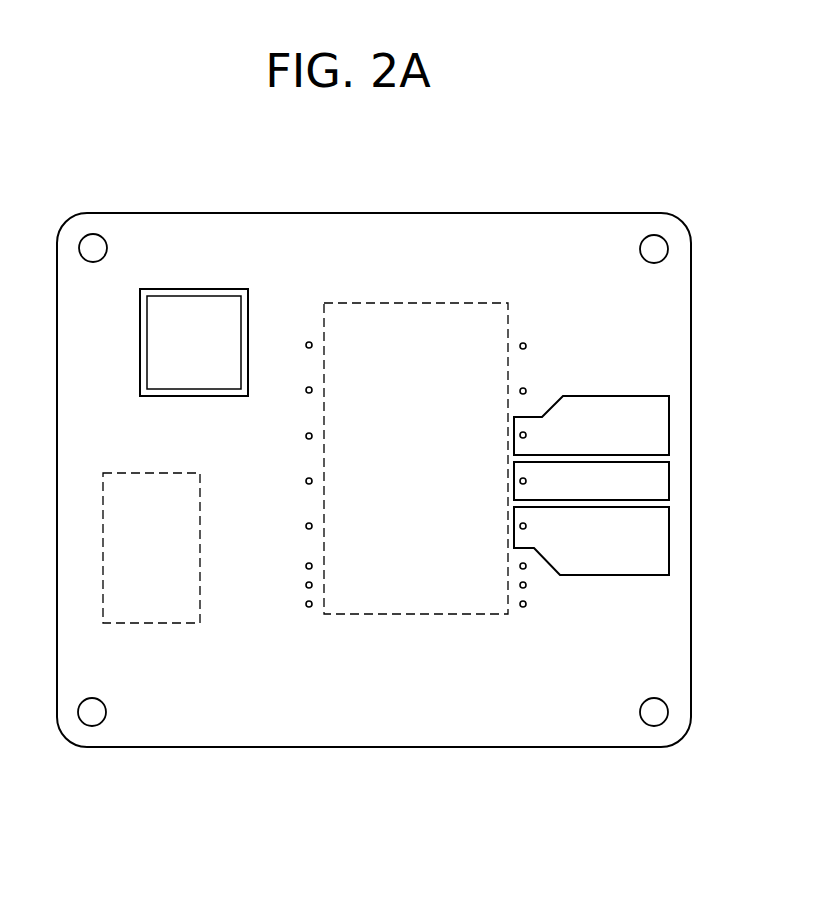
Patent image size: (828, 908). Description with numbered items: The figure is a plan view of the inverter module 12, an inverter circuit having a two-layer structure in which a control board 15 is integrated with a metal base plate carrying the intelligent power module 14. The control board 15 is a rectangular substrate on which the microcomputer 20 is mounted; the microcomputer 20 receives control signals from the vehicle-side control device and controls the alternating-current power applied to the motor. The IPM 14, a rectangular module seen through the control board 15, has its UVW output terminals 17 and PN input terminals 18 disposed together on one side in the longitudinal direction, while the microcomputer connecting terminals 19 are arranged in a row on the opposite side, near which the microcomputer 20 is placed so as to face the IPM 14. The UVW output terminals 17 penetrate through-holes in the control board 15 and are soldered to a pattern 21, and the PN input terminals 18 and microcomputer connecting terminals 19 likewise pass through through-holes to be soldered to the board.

The inverter module 12 is at (193, 205).
The intelligent power module 14 is at (404, 614).
The control board 15 is at (412, 247).
The UVW output terminals 17 is at (504, 422).
The PN input terminals 18 is at (533, 332).
The microcomputer connecting terminals 19 is at (300, 333).
The microcomputer 20 is at (162, 345).
The pattern 21 is at (698, 392).